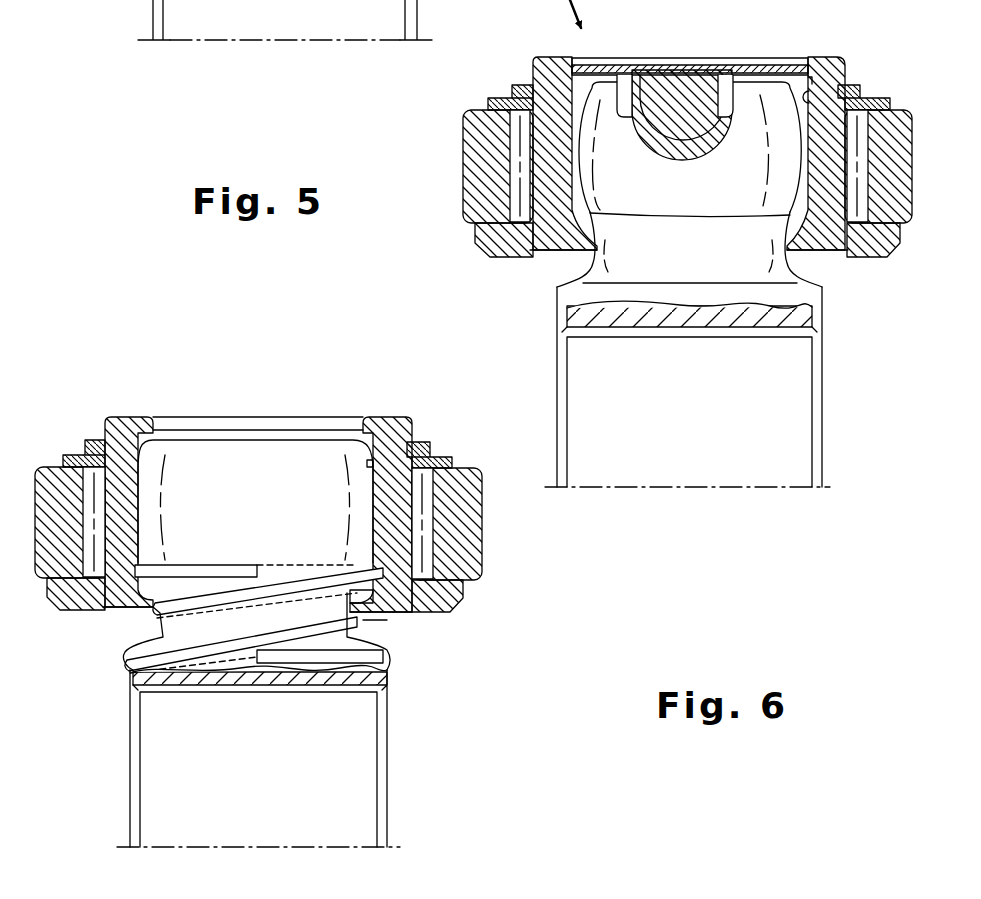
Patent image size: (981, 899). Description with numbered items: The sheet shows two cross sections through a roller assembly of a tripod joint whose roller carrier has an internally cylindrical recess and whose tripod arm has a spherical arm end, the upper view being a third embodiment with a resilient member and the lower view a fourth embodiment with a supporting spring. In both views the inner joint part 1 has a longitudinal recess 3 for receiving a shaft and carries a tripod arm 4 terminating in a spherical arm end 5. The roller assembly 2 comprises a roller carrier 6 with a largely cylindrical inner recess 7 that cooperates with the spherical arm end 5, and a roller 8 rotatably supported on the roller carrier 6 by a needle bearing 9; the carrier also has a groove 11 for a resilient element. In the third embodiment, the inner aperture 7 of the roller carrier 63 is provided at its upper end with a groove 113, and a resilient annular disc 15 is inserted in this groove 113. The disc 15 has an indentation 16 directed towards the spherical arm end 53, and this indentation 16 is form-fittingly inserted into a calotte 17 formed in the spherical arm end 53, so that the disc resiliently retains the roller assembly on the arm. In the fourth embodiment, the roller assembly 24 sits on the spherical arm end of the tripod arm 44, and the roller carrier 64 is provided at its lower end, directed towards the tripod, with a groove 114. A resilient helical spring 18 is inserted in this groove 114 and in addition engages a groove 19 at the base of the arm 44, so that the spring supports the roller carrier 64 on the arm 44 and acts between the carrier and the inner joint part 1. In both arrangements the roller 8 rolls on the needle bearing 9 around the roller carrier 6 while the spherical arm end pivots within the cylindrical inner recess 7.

In FIG. 5, the inner joint part 1 is at (560, 313).
In FIG. 6, the roller assembly 2 is at (132, 378).
In FIG. 6, the roller assembly 24 is at (248, 358).
In FIG. 5, the longitudinal recess 3 is at (796, 341).
In FIG. 6, the longitudinal recess 3 is at (353, 694).
In FIG. 5, the tripod arm 4 is at (763, 265).
In FIG. 6, the tripod arm 4 is at (388, 621).
In FIG. 6, the tripod arm 44 is at (286, 632).
In FIG. 5, the spherical arm end 5 is at (593, 170).
In FIG. 6, the spherical arm end 5 is at (345, 540).
In FIG. 5, the spherical arm end 53 is at (607, 149).
In FIG. 5, the roller carrier 6 is at (833, 58).
In FIG. 6, the roller carrier 6 is at (402, 417).
In FIG. 5, the roller carrier 63 is at (687, 129).
In FIG. 6, the roller carrier 64 is at (255, 486).
In FIG. 5, the inner recess 7 is at (848, 76).
In FIG. 6, the inner recess 7 is at (374, 460).
In FIG. 5, the roller 8 is at (472, 123).
In FIG. 6, the roller 8 is at (463, 490).
In FIG. 5, the needle bearing 9 is at (517, 148).
In FIG. 6, the needle bearing 9 is at (420, 525).
In FIG. 5, the groove 11 is at (805, 90).
In FIG. 6, the groove 11 is at (453, 605).
In FIG. 5, the groove 113 is at (804, 51).
In FIG. 6, the groove 114 is at (421, 624).
In FIG. 5, the resilient annular disc 15 is at (754, 66).
In FIG. 5, the indentation 16 is at (622, 78).
In FIG. 5, the calotte 17 is at (722, 82).
In FIG. 6, the resilient helical spring 18 is at (388, 687).
In FIG. 6, the groove 19 is at (368, 652).